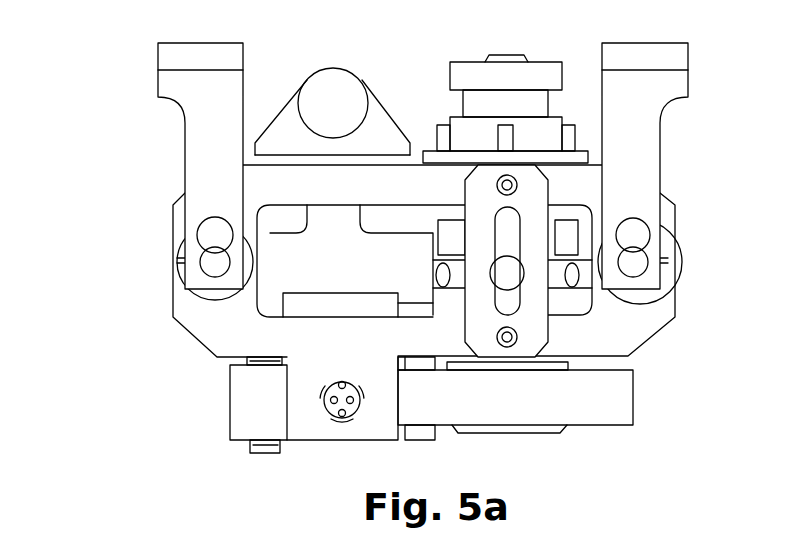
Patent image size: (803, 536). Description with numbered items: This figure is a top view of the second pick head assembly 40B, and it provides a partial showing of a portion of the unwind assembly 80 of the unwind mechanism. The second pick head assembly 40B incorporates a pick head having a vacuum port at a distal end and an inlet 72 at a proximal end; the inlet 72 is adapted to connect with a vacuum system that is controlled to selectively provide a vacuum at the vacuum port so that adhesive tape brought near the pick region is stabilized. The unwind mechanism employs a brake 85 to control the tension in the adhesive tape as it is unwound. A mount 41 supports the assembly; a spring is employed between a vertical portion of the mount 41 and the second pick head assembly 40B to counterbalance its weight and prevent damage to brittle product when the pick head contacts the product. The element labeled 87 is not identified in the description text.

The second pick head assembly 40B is at (112, 212).
The mount 41 is at (180, 42).
The pivot bracket 87 is at (334, 68).
The brake 85 is at (470, 62).
The unwind assembly 80 is at (388, 263).
The inlet 72 is at (323, 412).